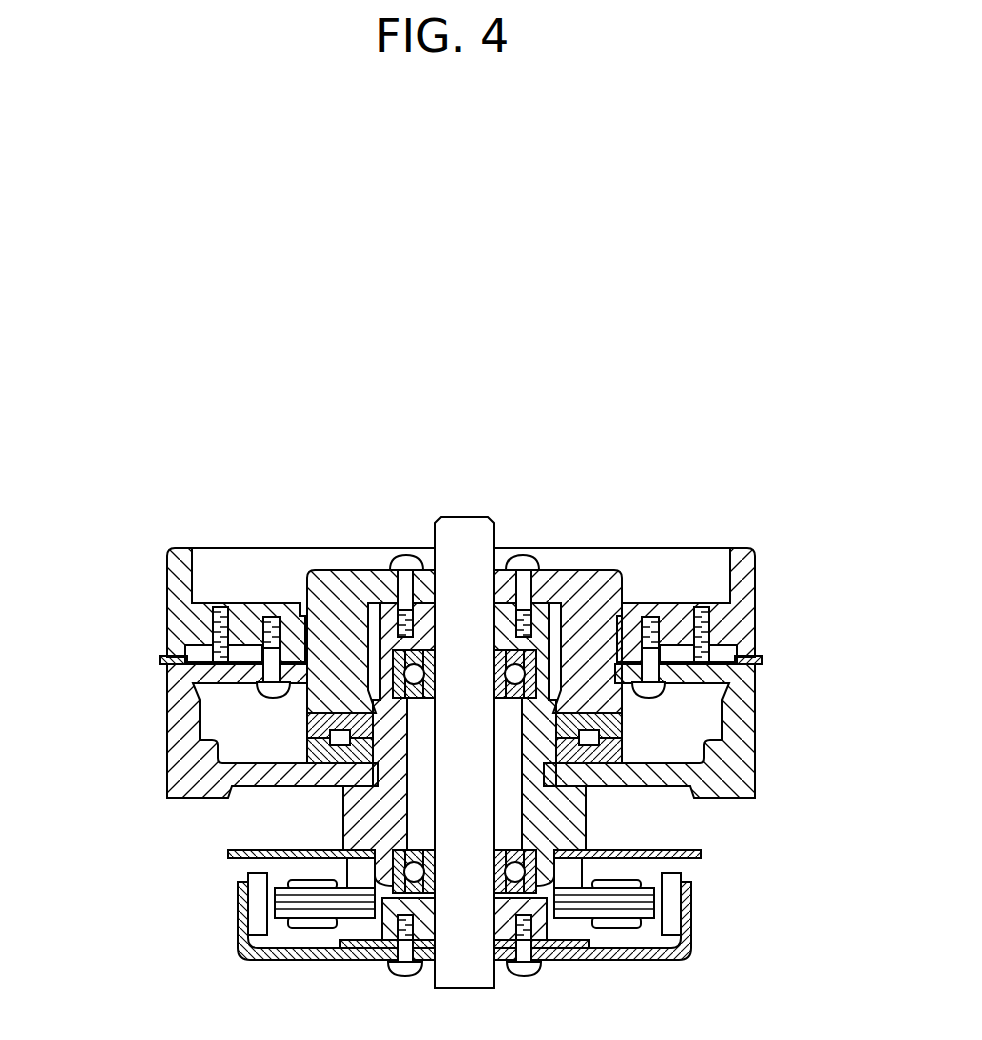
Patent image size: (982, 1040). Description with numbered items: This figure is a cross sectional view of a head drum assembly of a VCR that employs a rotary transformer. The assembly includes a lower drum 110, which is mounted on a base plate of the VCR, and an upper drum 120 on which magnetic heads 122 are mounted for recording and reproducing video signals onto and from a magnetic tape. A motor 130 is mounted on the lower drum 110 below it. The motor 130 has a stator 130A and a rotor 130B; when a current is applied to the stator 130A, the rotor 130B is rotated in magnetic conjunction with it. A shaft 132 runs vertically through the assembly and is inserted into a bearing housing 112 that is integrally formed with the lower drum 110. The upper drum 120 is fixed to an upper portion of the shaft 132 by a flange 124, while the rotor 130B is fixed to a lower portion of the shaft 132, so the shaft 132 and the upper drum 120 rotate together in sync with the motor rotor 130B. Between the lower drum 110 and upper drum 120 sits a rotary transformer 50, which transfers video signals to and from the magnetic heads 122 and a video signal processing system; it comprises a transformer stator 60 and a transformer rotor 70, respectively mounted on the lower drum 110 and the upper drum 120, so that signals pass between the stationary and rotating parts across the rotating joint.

The rotary transformer 50 is at (323, 738).
The transformer stator 60 is at (326, 750).
The transformer rotor 70 is at (307, 722).
The lower drum 110 is at (752, 765).
The hub portion 112 is at (540, 822).
The upper drum 120 is at (750, 617).
The magnetic head 122 is at (762, 660).
The flange 124 is at (537, 617).
The motor 130 is at (565, 913).
The stator 130A is at (690, 900).
The rotor 130B is at (655, 910).
The shaft 132 is at (465, 515).